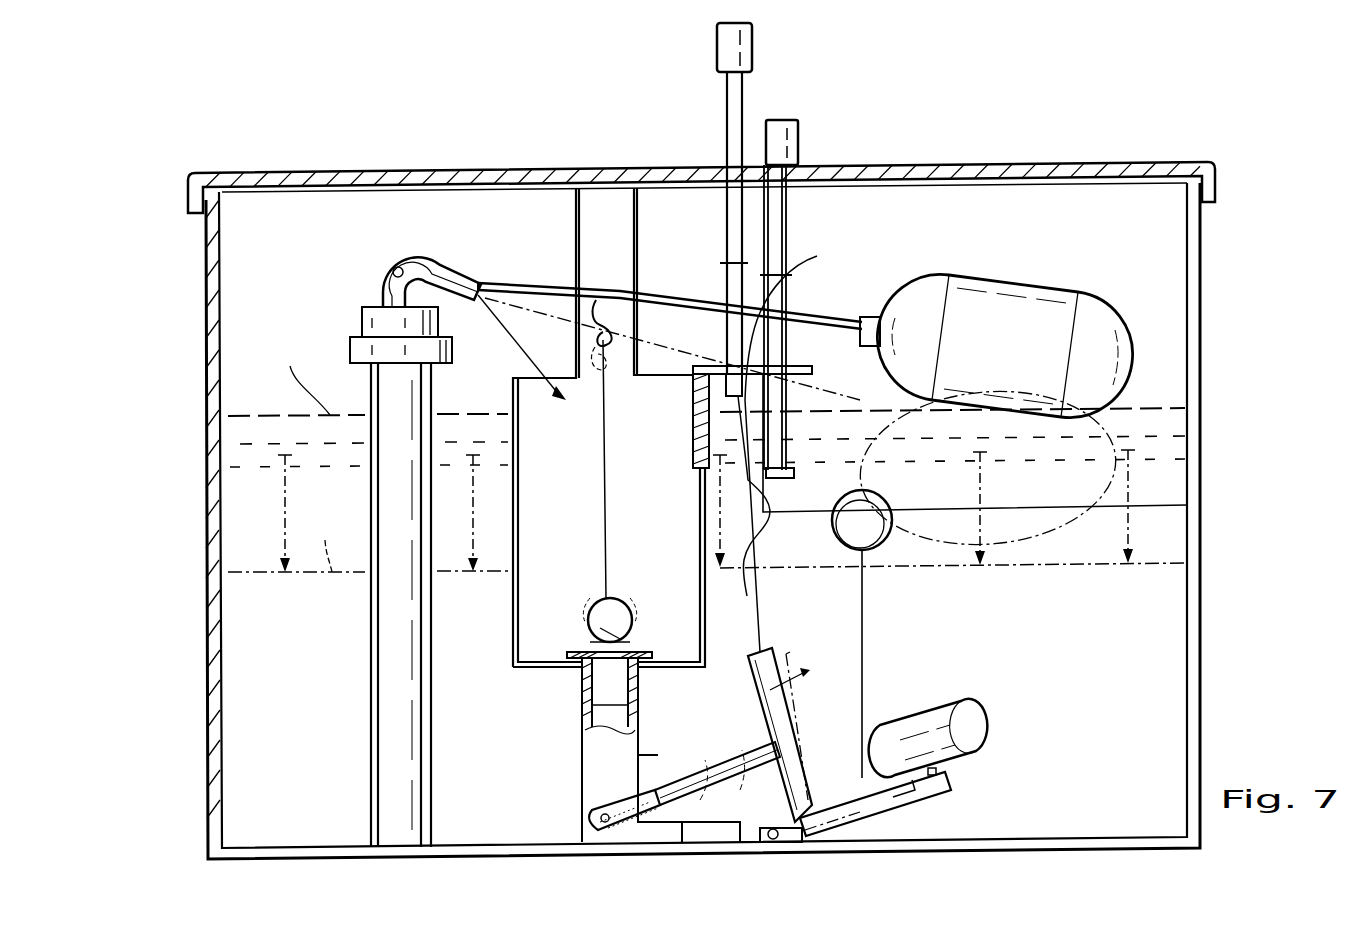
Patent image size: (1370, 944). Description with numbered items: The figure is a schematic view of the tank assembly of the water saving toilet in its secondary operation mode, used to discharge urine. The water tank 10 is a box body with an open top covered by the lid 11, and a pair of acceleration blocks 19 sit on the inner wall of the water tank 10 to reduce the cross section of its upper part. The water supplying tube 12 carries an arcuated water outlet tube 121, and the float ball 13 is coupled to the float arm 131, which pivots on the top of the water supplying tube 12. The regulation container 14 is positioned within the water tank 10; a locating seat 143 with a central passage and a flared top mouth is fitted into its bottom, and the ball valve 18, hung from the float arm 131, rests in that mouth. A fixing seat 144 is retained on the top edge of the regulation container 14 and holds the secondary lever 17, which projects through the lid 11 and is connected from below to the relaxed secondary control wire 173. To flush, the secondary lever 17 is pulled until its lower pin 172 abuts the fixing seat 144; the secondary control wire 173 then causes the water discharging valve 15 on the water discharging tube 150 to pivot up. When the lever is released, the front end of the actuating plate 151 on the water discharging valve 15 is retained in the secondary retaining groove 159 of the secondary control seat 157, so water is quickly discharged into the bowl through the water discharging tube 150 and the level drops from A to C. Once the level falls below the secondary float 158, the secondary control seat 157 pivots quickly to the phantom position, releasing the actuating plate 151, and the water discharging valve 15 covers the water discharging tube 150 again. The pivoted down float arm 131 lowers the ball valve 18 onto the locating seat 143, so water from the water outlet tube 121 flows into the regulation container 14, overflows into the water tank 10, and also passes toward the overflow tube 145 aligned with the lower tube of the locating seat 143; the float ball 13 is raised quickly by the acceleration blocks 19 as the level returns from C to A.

The water tank 10 is at (1190, 556).
The lid 11 is at (1066, 170).
The acceleration blocks 19 is at (1122, 203).
The water supplying tube 12 is at (380, 448).
The water outlet tube 121 is at (430, 270).
The float arm 131 is at (510, 281).
The float ball 13 is at (1120, 320).
The secondary lever 17 is at (717, 35).
The lower pin 172 is at (778, 446).
The fixing seat 144 is at (806, 366).
The regulation container 14 is at (513, 598).
The ball valve 18 is at (590, 632).
The locating seat 143 is at (570, 658).
The overflow tube 145 is at (582, 712).
The secondary control wire 173 is at (740, 512).
The secondary float 158 is at (880, 548).
The secondary control seat 157 is at (858, 800).
The secondary retaining groove 159 is at (770, 750).
The actuating plate 151 is at (745, 765).
The water discharging tube 150 is at (735, 822).
The water discharging valve 15 is at (735, 842).